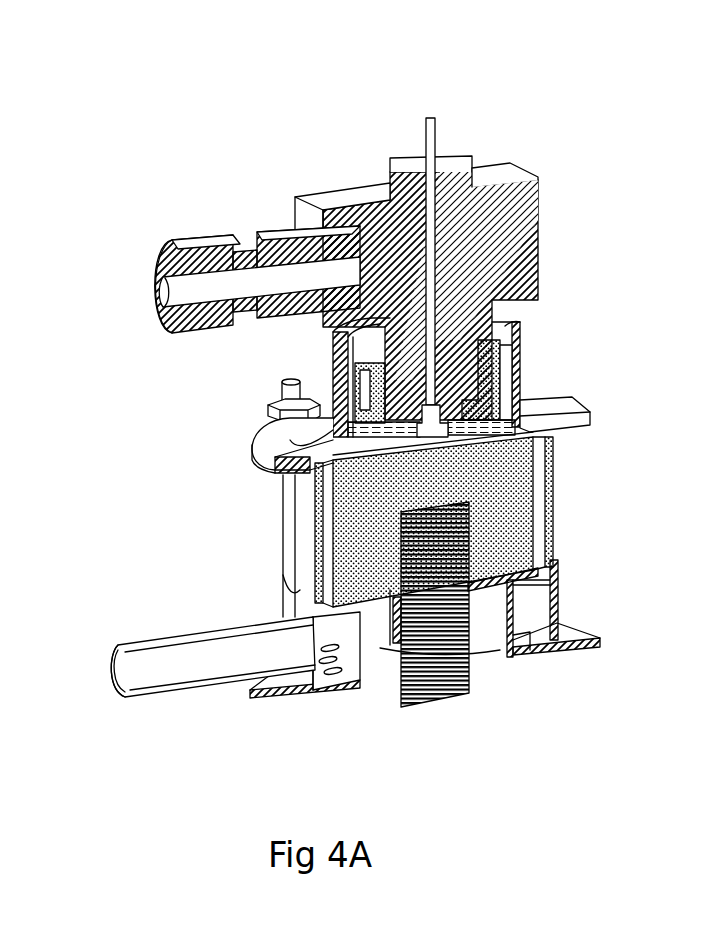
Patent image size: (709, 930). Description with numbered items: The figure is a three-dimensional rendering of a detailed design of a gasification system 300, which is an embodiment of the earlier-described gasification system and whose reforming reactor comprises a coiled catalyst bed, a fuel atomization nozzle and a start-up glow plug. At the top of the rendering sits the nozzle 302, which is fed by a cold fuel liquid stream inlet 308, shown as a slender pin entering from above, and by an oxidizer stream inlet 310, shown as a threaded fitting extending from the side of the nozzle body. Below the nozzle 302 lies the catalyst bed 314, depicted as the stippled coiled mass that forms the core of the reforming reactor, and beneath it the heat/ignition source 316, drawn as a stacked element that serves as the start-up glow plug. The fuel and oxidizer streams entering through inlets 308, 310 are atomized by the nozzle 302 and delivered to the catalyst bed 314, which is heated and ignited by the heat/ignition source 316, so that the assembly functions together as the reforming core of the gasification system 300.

The gasification system 300 is at (347, 391).
The nozzle 302 is at (527, 223).
The cold fuel liquid stream inlet 308 is at (430, 116).
The oxidizer stream inlet 310 is at (173, 292).
The catalyst bed 314 is at (517, 497).
The heat/ignition source 316 is at (446, 692).